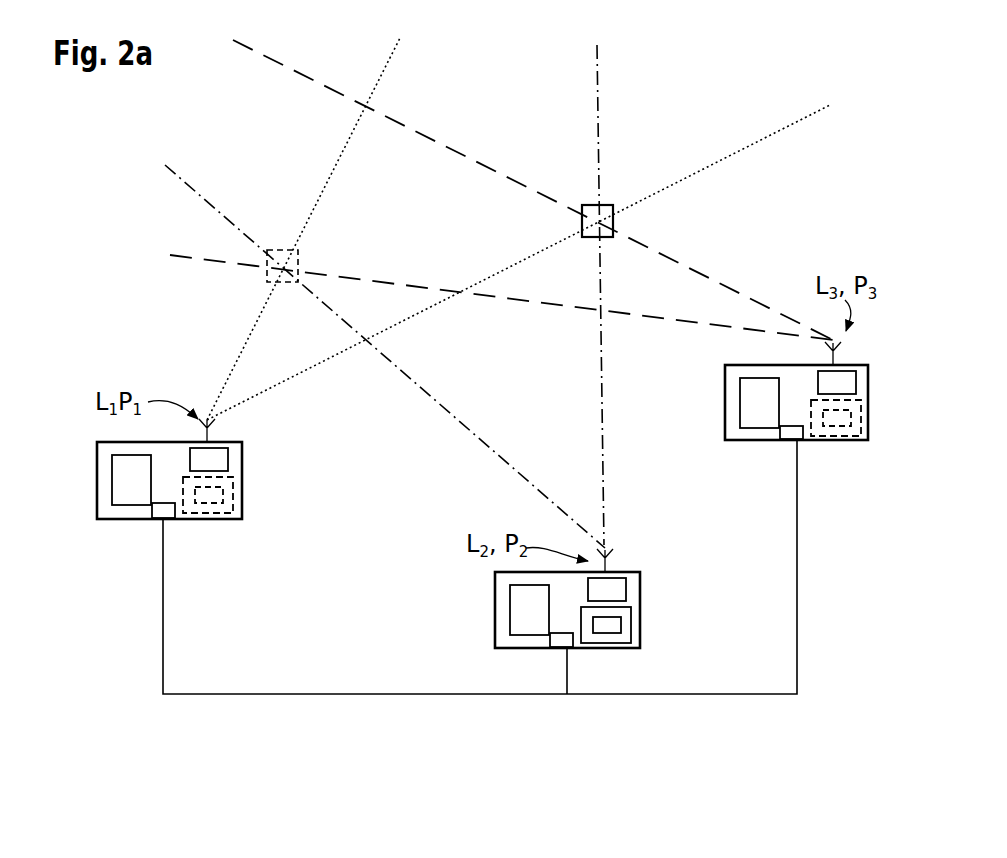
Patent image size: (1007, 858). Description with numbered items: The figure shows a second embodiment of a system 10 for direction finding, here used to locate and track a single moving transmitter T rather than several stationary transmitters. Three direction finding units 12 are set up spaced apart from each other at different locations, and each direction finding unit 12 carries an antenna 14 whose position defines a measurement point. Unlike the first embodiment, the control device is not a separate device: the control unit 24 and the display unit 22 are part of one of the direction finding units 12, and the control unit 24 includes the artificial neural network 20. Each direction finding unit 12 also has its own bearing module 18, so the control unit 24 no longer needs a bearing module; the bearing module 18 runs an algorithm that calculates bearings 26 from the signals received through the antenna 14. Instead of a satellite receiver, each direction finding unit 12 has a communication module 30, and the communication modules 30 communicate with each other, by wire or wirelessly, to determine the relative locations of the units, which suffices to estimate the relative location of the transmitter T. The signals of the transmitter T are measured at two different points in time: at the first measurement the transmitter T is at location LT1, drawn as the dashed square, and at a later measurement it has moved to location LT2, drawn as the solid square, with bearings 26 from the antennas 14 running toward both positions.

The system 10 is at (212, 753).
The direction finding unit 12 is at (97, 506).
The antenna 14 is at (212, 428).
The bearing module 18 is at (229, 458).
The artificial neural network 20 is at (206, 513).
The display unit 22 is at (112, 459).
The control unit 24 is at (233, 491).
The bearing 26 is at (240, 344).
The communication module 30 is at (152, 518).
The transmitter T is at (612, 205).
The location of the transmitter at the first point in time LT1 is at (278, 248).
The location of the transmitter at the second point in time LT2 is at (580, 203).